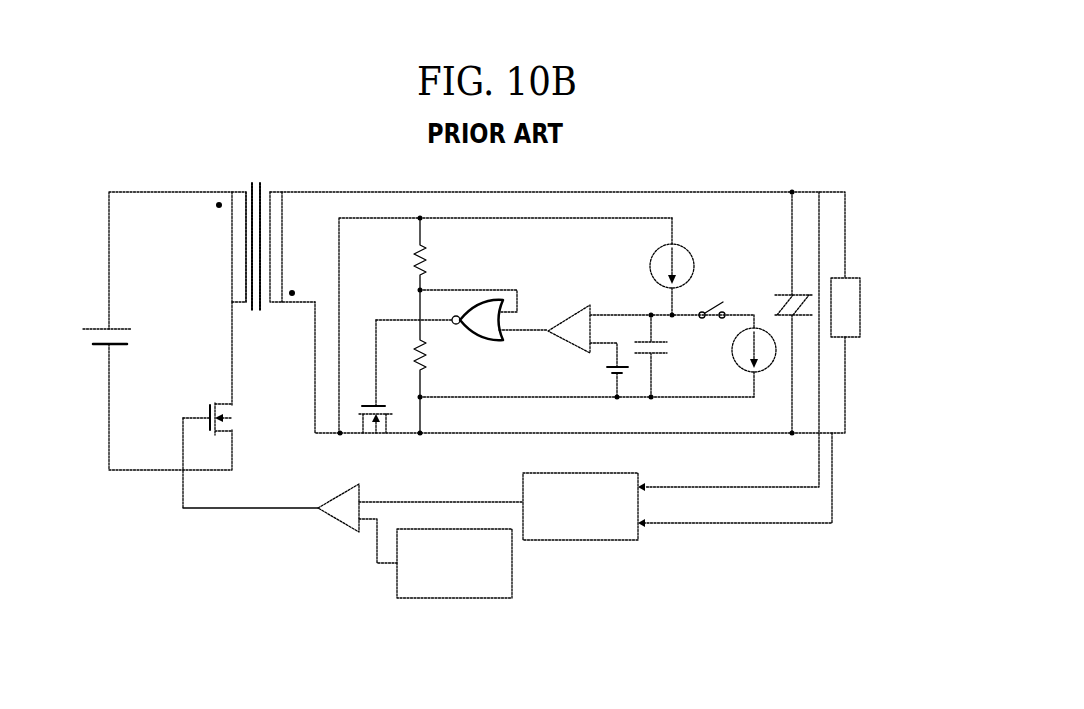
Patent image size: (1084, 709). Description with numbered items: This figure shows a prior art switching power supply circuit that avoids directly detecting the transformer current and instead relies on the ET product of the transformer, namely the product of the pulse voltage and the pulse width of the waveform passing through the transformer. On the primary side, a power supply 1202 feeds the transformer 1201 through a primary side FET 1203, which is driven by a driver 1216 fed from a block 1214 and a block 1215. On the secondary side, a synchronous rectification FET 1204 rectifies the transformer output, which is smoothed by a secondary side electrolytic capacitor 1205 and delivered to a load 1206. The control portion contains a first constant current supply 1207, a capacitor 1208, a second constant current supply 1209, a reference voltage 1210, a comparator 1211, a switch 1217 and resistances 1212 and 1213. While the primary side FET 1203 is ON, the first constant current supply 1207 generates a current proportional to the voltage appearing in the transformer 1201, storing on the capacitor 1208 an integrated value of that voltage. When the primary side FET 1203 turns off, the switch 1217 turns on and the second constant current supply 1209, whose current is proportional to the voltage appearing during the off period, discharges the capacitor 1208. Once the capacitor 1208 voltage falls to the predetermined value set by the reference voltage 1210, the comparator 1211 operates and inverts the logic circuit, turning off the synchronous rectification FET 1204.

The transformer 1201 is at (282, 172).
The power supply 1202 is at (145, 312).
The primary side FET 1203 is at (215, 402).
The synchronous rectification FET 1204 is at (375, 437).
The secondary side electrolytic capacitor 1205 is at (785, 293).
The load 1206 is at (875, 262).
The first constant current supply 1207 is at (707, 233).
The capacitor 1208 is at (655, 347).
The second constant current supply 1209 is at (737, 365).
The reference voltage 1210 is at (607, 370).
The comparator 1211 is at (573, 310).
The resistance 1212 is at (428, 252).
The resistance 1213 is at (428, 358).
The control circuit 1214 is at (522, 487).
The oscillator 1215 is at (513, 577).
The driver 1216 is at (337, 497).
The switch 1217 is at (727, 288).